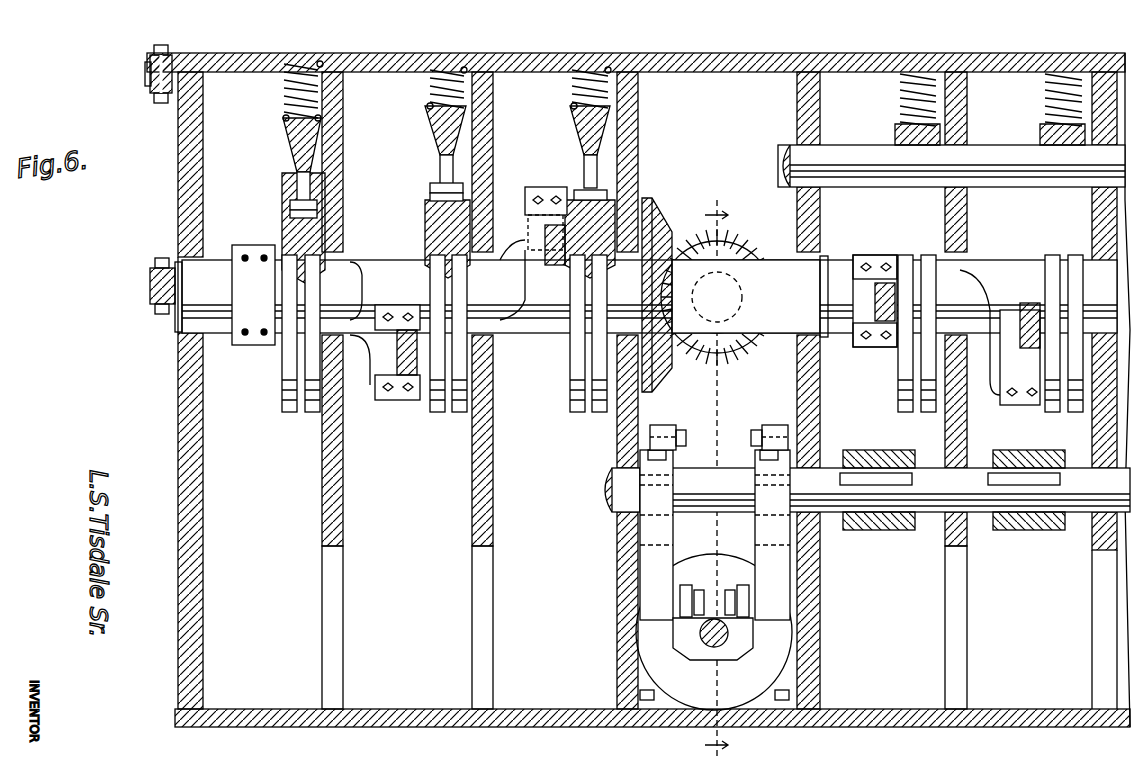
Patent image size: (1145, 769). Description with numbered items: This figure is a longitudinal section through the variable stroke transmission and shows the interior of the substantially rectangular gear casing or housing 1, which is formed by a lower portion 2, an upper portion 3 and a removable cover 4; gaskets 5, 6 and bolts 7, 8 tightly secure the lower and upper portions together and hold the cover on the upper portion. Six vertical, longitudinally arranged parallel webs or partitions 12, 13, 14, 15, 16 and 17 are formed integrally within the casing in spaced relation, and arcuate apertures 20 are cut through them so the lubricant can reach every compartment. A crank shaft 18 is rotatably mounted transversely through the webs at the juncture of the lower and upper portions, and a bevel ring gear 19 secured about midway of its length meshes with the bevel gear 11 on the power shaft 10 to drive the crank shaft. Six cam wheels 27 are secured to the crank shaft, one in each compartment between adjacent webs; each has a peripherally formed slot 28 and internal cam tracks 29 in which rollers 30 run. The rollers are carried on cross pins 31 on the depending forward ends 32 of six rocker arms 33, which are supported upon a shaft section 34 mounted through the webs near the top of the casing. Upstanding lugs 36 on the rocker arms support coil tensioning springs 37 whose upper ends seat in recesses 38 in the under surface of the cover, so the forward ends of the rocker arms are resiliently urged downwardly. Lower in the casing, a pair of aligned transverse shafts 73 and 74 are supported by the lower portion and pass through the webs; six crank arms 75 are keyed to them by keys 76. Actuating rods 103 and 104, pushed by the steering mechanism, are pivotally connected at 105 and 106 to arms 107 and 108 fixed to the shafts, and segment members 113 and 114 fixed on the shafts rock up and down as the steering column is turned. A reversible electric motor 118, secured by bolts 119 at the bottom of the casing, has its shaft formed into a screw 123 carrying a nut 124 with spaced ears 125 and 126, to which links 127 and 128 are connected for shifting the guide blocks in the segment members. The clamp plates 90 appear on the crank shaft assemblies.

The gear casing or housing 1 is at (176, 192).
The lower portion 2 is at (178, 505).
The upper portion 3 is at (178, 232).
The removable cover 4 is at (262, 55).
The gasket 5 is at (150, 290).
The gasket 6 is at (145, 70).
The bolt 7 is at (158, 305).
The bolt 8 is at (172, 60).
The power shaft 10 is at (740, 297).
The bevel gear 11 is at (742, 238).
The web or partition 12 is at (343, 492).
The web or partition 13 is at (493, 492).
The web or partition 14 is at (617, 455).
The web or partition 15 is at (820, 408).
The web or partition 16 is at (967, 426).
The web or partition 17 is at (1092, 543).
The crank shaft 18 is at (365, 290).
The bevel ring gear 19 is at (665, 225).
The arcuate aperture 20 is at (472, 610).
The cam wheel 27 is at (282, 229).
The peripherally formed slot 28 is at (282, 180).
The internal cam track 29 is at (325, 220).
The roller 30 is at (430, 197).
The cross pin 31 is at (318, 204).
The depending forward end 32 is at (310, 190).
The rocker arm 33 is at (283, 130).
The shaft section 34 is at (845, 165).
The upstanding lug 36 is at (283, 117).
The coil tensioning spring 37 is at (284, 92).
The seat or recess 38 is at (322, 60).
The transversely extending shaft 73 is at (832, 512).
The transversely extending shaft 74 is at (605, 510).
The crank arm 75 is at (872, 530).
The key 76 is at (988, 480).
The clamp plate 90 is at (396, 312).
The actuating rod 103 is at (666, 425).
The actuating rod 104 is at (774, 425).
The pivotal connection 105 is at (686, 436).
The pivotal connection 106 is at (752, 435).
The arm 107 is at (666, 455).
The arm 108 is at (762, 462).
The segment member 113 is at (762, 520).
The segment member 114 is at (670, 528).
The reversible electric motor 118 is at (714, 632).
The bolt 119 is at (650, 690).
The screw 123 is at (728, 633).
The nut 124 is at (684, 636).
The ear 125 is at (740, 590).
The ear 126 is at (690, 590).
The link 127 is at (730, 588).
The link 128 is at (695, 588).